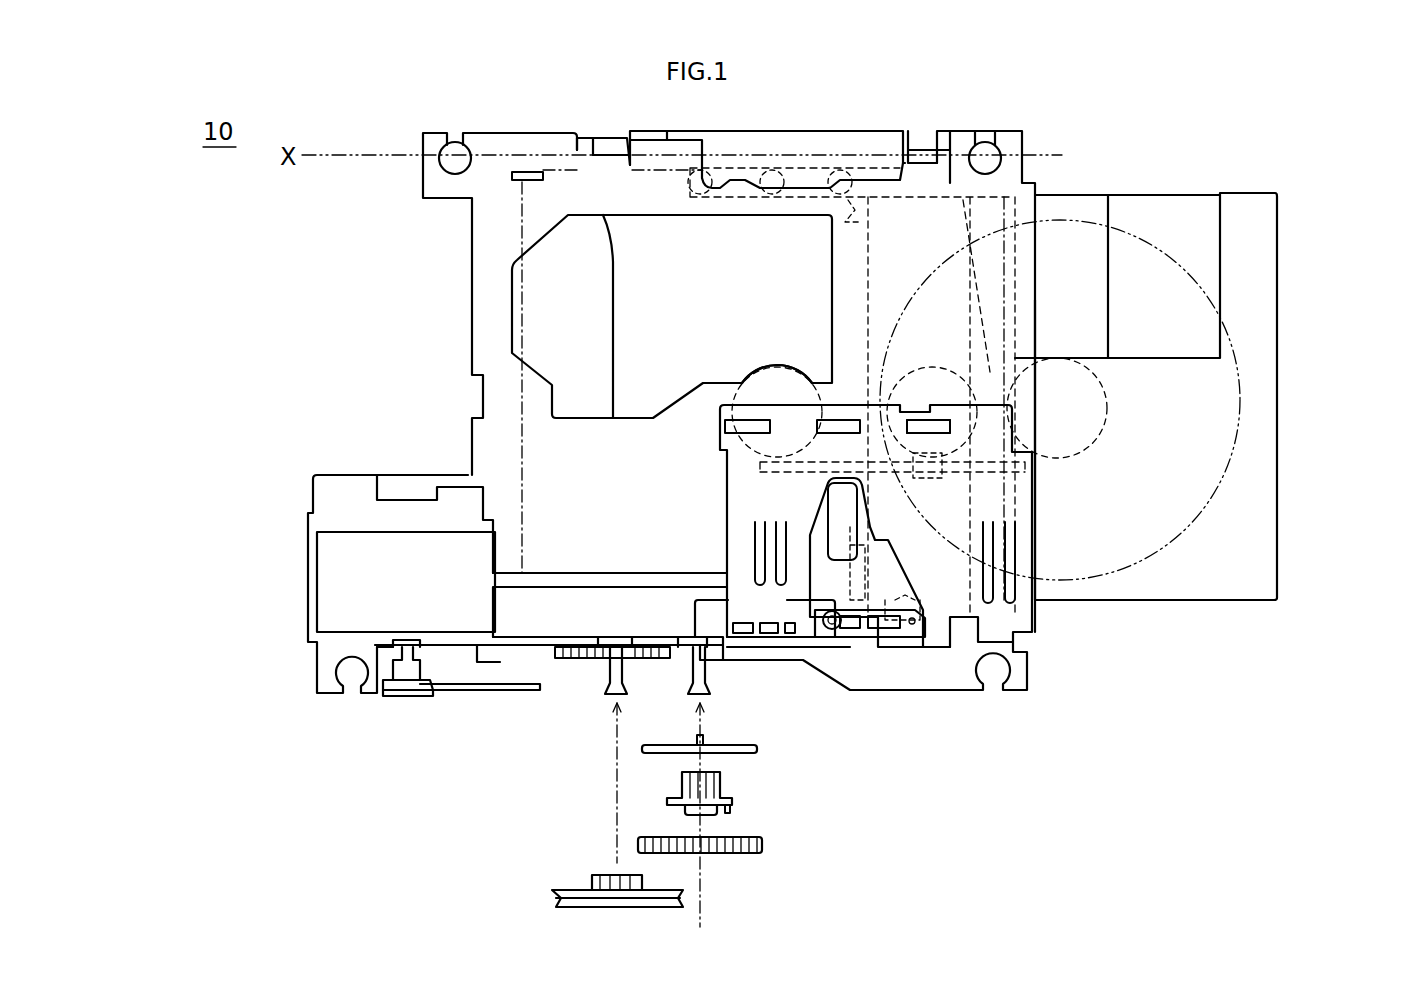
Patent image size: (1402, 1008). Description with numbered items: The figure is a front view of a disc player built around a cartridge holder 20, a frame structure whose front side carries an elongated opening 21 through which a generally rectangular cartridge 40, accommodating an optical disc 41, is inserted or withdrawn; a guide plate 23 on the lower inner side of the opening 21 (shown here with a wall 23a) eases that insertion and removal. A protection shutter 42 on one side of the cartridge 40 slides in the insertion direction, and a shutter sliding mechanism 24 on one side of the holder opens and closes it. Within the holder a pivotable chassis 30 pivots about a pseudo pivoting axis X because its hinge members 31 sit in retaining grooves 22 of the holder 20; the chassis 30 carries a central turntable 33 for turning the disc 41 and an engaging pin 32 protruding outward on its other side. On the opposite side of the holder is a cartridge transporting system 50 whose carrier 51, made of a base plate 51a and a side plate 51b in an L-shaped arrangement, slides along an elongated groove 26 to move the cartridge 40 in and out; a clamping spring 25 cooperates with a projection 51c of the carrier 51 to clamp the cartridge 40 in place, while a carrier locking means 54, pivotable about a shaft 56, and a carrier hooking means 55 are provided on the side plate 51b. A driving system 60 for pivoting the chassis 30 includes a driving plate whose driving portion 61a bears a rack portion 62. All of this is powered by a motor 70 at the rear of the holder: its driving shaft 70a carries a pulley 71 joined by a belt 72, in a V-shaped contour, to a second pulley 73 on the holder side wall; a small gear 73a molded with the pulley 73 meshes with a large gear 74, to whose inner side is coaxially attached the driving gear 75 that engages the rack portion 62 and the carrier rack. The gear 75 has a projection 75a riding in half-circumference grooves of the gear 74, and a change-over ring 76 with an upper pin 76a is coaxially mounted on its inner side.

The cartridge holder 20 is at (470, 316).
The elongated opening 21 is at (1036, 525).
The retaining grooves 22 is at (596, 140).
The guide plate 23 is at (997, 215).
The chamber wall 23a is at (975, 243).
The shutter sliding mechanism 24 is at (742, 178).
The clamping spring 25 is at (1030, 480).
The elongated groove 26 is at (660, 575).
The pivotable chassis 30 is at (506, 398).
The hinge members 31 is at (622, 140).
The engaging pin 32 is at (795, 645).
The turntable 33 is at (777, 368).
The cartridge 40 is at (1265, 234).
The optical disc 41 is at (1240, 383).
The protection shutter 42 is at (1075, 210).
The cartridge transporting system 50 is at (1048, 676).
The carrier 51 is at (785, 508).
The base plate 51a is at (958, 425).
The side plate 51b is at (935, 652).
The projection 51c is at (930, 480).
The carrier locking means 54 is at (908, 640).
The carrier hooking means 55 is at (893, 575).
The shaft 56 is at (826, 632).
The driving system 60 is at (577, 669).
The driving portion 61a is at (605, 668).
The rack portion 62 is at (665, 668).
The motor 70 is at (335, 592).
The driving shaft 70a is at (375, 648).
The pulley 71 is at (400, 672).
The belt 72 is at (440, 690).
The pulley 73 is at (580, 895).
The small gear 73a is at (615, 873).
The large gear 74 is at (763, 848).
The driving gear 75 is at (722, 785).
The projection 75a is at (732, 808).
The change-over ring 76 is at (757, 750).
The upper pin 76a is at (705, 740).